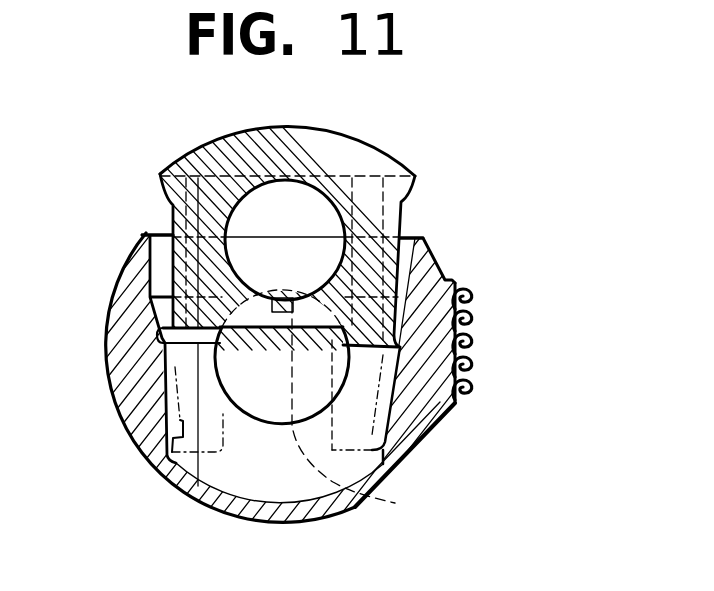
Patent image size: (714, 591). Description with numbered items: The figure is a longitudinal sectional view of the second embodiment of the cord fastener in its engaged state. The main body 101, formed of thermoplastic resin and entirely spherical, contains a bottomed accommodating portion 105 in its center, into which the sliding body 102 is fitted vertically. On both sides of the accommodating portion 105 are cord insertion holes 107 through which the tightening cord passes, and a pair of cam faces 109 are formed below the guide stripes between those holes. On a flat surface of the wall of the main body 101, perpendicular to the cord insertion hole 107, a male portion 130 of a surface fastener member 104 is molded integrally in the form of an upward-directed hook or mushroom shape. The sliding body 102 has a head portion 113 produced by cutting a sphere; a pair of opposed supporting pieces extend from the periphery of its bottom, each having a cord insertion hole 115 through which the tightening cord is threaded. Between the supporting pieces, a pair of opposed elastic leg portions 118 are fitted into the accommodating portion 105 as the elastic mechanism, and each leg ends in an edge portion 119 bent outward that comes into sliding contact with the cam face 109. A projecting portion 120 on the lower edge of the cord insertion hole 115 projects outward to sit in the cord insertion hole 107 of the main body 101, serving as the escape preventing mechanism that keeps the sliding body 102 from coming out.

The main body 101 is at (483, 391).
The sliding body 102 is at (270, 125).
The surface fastener member 104 is at (483, 320).
The accommodating portion 105 is at (403, 248).
The cord insertion hole 107 is at (250, 357).
The cam face 109 is at (165, 395).
The head portion 113 is at (330, 129).
The cord insertion hole 115 is at (270, 216).
The elastic leg portion 118 is at (200, 265).
The edge portion 119 is at (157, 345).
The projecting portion 120 is at (395, 503).
The male portion 130 is at (477, 341).